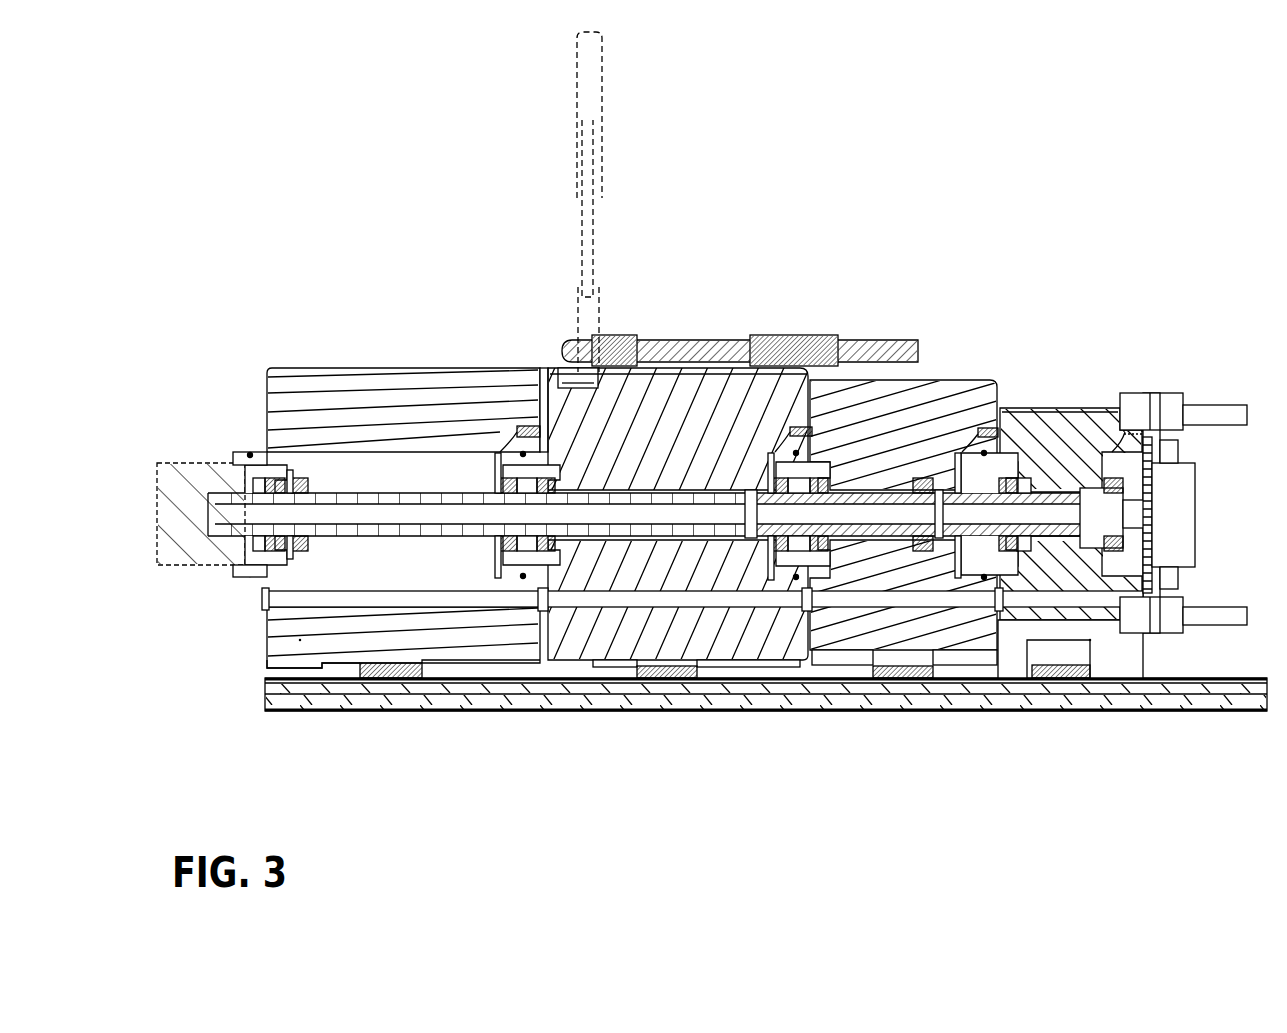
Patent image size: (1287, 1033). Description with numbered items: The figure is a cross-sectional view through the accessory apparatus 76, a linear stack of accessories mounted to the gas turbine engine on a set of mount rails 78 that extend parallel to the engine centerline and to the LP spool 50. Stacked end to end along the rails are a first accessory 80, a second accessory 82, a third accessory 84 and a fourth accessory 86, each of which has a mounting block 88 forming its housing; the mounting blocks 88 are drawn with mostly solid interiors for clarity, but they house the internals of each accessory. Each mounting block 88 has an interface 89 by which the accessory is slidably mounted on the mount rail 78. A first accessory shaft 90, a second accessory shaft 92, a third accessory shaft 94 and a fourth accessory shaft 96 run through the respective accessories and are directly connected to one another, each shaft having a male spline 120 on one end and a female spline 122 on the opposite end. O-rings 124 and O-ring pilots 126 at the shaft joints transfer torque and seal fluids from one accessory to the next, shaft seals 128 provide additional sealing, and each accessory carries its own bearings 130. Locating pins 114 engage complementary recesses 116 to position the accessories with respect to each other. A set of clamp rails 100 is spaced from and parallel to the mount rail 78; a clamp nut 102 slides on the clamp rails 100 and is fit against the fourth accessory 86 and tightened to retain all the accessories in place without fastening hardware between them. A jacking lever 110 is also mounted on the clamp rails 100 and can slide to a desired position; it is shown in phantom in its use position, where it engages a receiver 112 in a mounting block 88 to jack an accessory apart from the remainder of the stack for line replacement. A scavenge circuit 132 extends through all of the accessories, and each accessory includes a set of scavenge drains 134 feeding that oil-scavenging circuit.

The LP spool 50 is at (180, 520).
The accessory apparatus 76 is at (296, 276).
The mount rails 78 is at (1235, 712).
The first accessory 80 is at (371, 358).
The second accessory 82 is at (708, 358).
The third accessory 84 is at (975, 368).
The fourth accessory 86 is at (1081, 397).
The mounting blocks 88 is at (380, 392).
The interface 89 is at (390, 680).
The first accessory shaft 90 is at (418, 662).
The second accessory shaft 92 is at (700, 667).
The third accessory shaft 94 is at (940, 665).
The fourth accessory shaft 96 is at (1065, 662).
The clamp rails 100 is at (1218, 413).
The clamp nut 102 is at (1210, 489).
The jacking lever 110 is at (569, 270).
The receivers 112 is at (544, 400).
The locating pins 114 is at (522, 428).
The recesses 116 is at (528, 432).
The male spline 120 is at (243, 483).
The female spline 122 is at (455, 560).
The O-rings 124 is at (250, 452).
The O-ring pilots 126 is at (532, 566).
The shaft seals 128 is at (268, 605).
The bearings 130 is at (262, 585).
The scavenge circuit 132 is at (622, 618).
The scavenge drains 134 is at (300, 640).